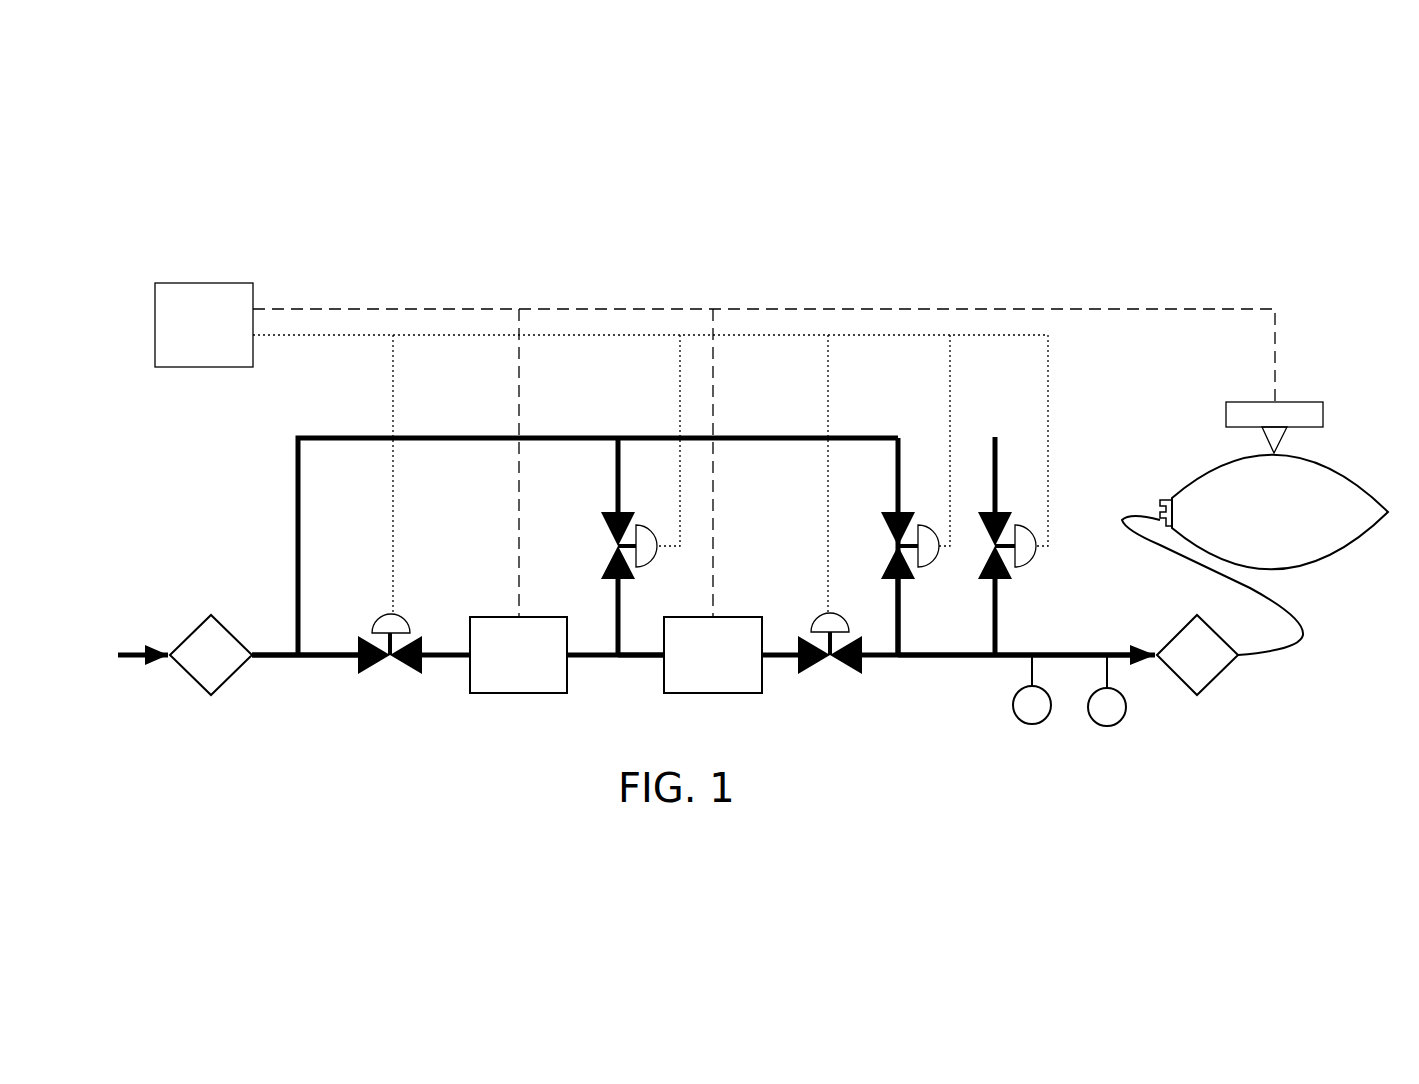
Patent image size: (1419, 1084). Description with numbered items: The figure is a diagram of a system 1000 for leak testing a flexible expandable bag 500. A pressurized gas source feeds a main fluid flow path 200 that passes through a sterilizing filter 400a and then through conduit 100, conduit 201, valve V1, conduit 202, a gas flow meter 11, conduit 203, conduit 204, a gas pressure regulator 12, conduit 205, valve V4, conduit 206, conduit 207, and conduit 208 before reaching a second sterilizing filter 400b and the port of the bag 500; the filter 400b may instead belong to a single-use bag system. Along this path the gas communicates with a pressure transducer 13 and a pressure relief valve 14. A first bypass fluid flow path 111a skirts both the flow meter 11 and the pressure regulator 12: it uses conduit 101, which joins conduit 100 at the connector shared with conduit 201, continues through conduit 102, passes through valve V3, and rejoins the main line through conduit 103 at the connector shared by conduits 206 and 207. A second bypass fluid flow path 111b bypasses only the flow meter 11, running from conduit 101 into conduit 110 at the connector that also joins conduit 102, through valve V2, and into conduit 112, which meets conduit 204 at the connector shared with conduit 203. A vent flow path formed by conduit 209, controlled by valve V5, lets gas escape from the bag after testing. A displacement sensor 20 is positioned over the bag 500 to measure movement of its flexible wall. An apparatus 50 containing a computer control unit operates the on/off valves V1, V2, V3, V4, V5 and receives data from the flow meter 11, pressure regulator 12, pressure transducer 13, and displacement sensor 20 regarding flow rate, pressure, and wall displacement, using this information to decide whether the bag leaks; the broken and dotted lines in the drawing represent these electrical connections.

The system 1000 is at (346, 268).
The apparatus including a computer control unit 50 is at (203, 283).
The fluid flow path 200 is at (428, 740).
The conduit 100 is at (280, 658).
The sterilizing filter 400a is at (190, 678).
The conduit 201 is at (330, 658).
The conduit 101 is at (298, 438).
The conduit 102 is at (875, 437).
The first bypass fluid flow path 111a is at (768, 428).
The second bypass fluid flow path 111b is at (606, 488).
The conduit 110 is at (618, 492).
The conduit 112 is at (616, 598).
The gas flow on/off valve V1 is at (390, 654).
The gas flow on/off valve V2 is at (617, 545).
The gas flow on/off valve V3 is at (900, 545).
The gas flow on/off valve V4 is at (830, 653).
The gas flow on/off valve V5 is at (998, 508).
The conduit 202 is at (458, 650).
The gas flow meter 11 is at (518, 693).
The conduit 203 is at (585, 657).
The conduit 204 is at (636, 655).
The gas pressure regulator 12 is at (712, 693).
The conduit 205 is at (782, 640).
The conduit 206 is at (880, 658).
The conduit 207 is at (937, 658).
The conduit 208 is at (1015, 652).
The conduit 103 is at (897, 625).
The conduit 209 is at (995, 625).
The pressure transducer 13 is at (1032, 689).
The pressure relief valve 14 is at (1107, 690).
The sterilizing filter 400b is at (1173, 675).
The flexible expandable bag 500 is at (1197, 485).
The displacement sensor 20 is at (1240, 402).